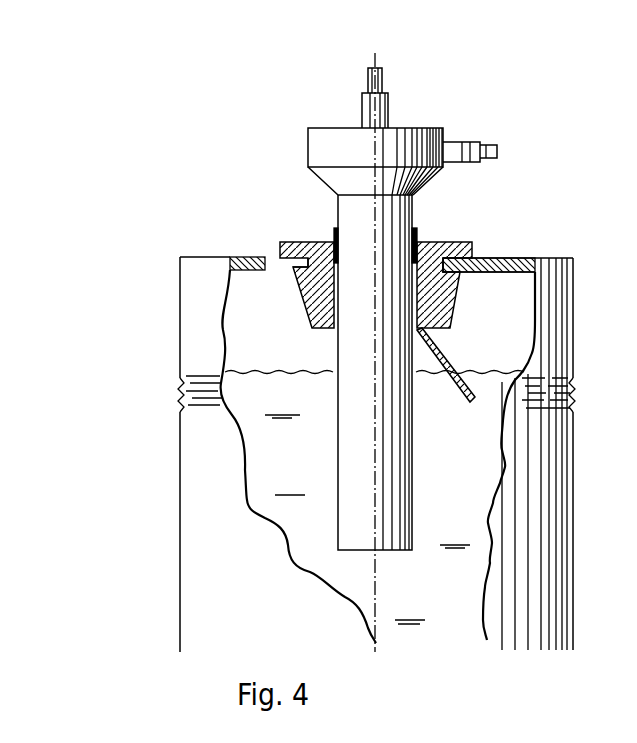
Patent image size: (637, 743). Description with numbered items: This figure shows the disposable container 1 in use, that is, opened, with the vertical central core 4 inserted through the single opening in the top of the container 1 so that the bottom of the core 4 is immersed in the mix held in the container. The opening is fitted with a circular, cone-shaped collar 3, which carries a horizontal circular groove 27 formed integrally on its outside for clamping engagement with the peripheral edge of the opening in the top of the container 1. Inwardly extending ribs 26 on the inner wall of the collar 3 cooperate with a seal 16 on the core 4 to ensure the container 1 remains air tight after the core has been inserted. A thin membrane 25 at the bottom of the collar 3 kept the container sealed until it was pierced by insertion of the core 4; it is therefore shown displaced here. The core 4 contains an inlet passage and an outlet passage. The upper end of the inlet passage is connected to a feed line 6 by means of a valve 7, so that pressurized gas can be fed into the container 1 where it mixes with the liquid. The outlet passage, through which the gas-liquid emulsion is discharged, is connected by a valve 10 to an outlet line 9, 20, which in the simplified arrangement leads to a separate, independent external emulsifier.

The container 1 is at (193, 307).
The collar 3 is at (470, 242).
The central core 4 is at (365, 538).
The feed line 6 is at (487, 142).
The valve 7 is at (467, 140).
The outlet line 9 is at (426, 64).
The outlet line 20 is at (382, 82).
The valve 10 is at (355, 112).
The seal 16 is at (333, 228).
The membrane 25 is at (445, 360).
The ribs 26 is at (333, 240).
The groove 27 is at (297, 263).